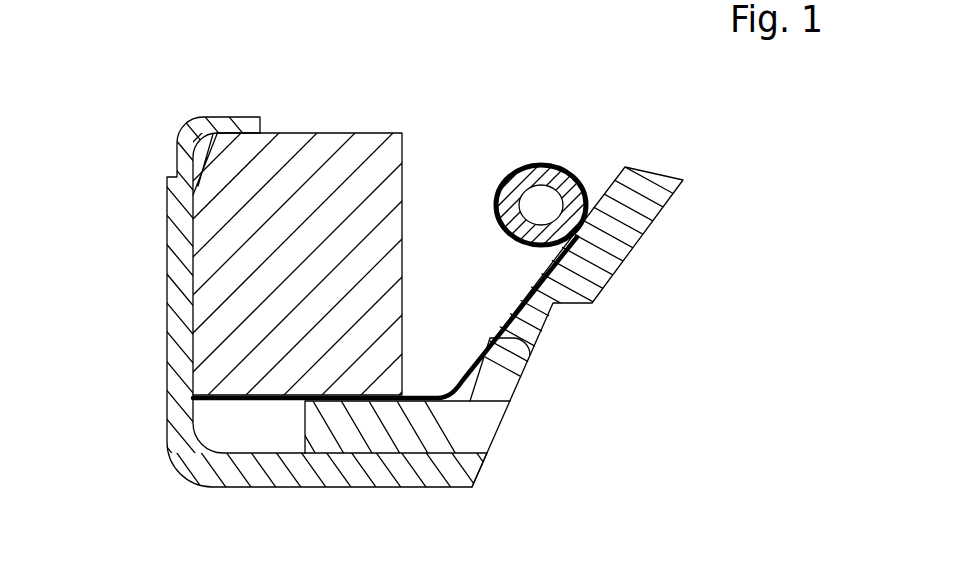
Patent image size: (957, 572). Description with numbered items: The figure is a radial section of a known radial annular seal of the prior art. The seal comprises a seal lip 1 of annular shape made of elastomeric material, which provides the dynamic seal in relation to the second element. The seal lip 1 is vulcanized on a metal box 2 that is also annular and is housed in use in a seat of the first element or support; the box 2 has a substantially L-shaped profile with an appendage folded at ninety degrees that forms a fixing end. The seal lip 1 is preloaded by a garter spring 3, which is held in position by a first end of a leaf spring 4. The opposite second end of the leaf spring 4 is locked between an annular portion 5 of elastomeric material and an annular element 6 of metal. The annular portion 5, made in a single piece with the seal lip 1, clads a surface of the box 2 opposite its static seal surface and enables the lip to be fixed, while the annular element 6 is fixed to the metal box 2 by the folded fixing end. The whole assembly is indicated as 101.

The seal lip 1 is at (640, 206).
The metal box 2 is at (190, 401).
The garter spring 3 is at (565, 168).
The leaf spring 4 is at (527, 357).
The annular portion 5 is at (362, 425).
The annular element 6 is at (262, 238).
The seal assembly 101 is at (392, 286).